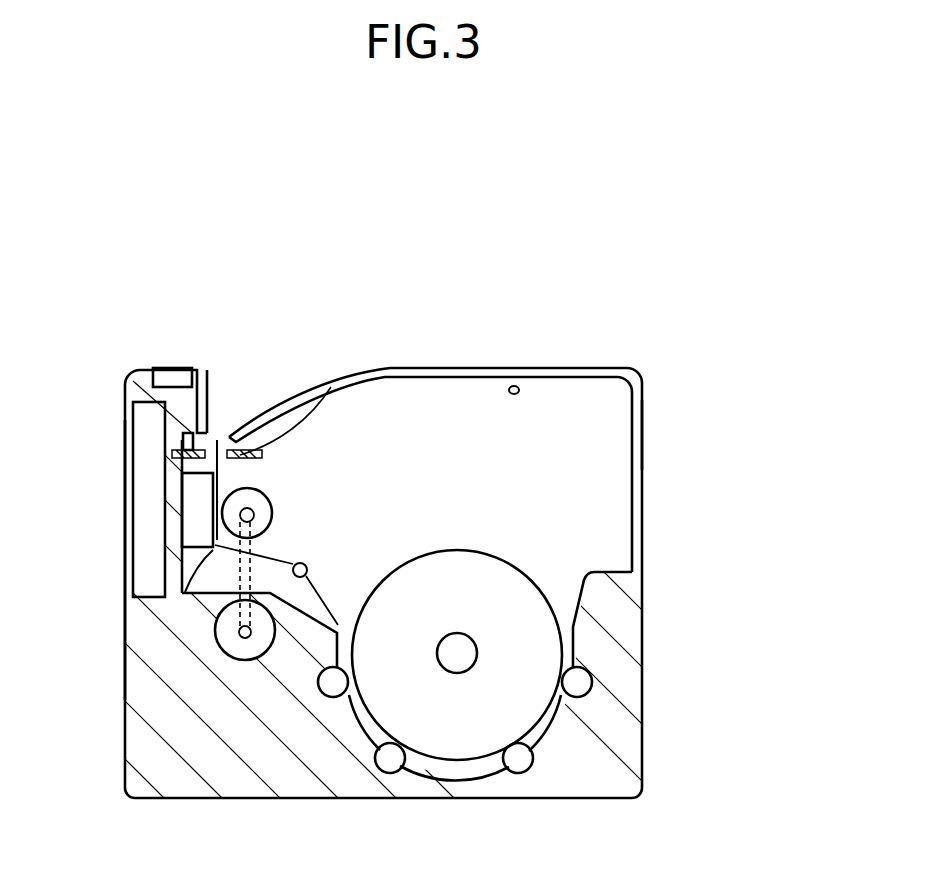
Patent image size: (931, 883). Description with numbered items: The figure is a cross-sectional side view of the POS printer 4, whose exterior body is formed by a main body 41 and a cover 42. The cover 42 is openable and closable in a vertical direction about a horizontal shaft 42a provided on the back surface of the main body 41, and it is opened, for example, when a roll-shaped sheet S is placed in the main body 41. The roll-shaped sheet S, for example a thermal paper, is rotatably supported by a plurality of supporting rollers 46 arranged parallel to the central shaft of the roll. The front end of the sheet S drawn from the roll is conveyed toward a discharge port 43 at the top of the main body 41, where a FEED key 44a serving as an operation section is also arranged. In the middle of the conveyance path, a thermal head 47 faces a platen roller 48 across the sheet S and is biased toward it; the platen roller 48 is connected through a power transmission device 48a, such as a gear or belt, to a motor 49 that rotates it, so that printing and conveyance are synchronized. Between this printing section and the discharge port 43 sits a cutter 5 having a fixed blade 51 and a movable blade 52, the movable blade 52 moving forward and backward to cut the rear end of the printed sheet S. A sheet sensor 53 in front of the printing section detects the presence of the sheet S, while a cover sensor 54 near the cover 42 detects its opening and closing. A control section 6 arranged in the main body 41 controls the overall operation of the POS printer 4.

The POS printer 4 is at (811, 229).
The cutter 5 is at (364, 264).
The control section 6 is at (125, 567).
The main body 41 is at (628, 627).
The cover 42 is at (580, 368).
The horizontal shaft 42a is at (643, 433).
The discharge port 43 is at (221, 430).
The FEED key 44a is at (168, 365).
The supporting rollers 46 is at (517, 763).
The thermal head 47 is at (195, 517).
The platen roller 48 is at (270, 508).
The power transmission device 48a is at (245, 580).
The motor 49 is at (238, 652).
The fixed blade 51 is at (207, 372).
The movable blade 52 is at (331, 387).
The sheet sensor 53 is at (183, 593).
The cover sensor 54 is at (516, 384).
The roll-shaped sheet S is at (513, 698).